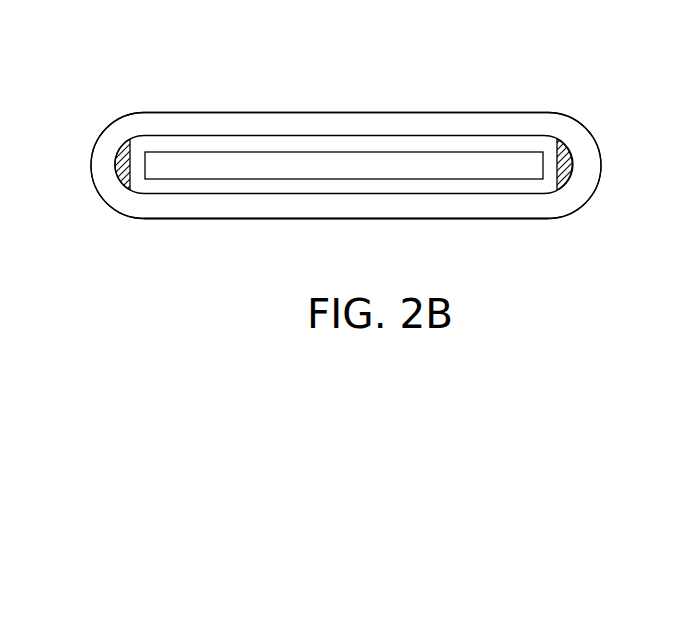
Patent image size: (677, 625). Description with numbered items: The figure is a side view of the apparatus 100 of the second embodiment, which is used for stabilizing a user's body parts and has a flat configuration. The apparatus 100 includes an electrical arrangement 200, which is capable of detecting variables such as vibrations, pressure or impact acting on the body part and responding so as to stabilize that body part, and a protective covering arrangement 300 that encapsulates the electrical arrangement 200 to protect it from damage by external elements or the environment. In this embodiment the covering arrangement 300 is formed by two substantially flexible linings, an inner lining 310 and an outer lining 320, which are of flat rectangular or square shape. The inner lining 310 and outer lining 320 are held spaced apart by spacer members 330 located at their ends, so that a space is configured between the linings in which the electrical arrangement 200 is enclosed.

The apparatus 100 is at (480, 75).
The electrical arrangement 200 is at (211, 181).
The covering arrangement 300 is at (310, 112).
The inner lining 310 is at (186, 135).
The outer lining 320 is at (385, 220).
The spacer member 330 is at (120, 165).